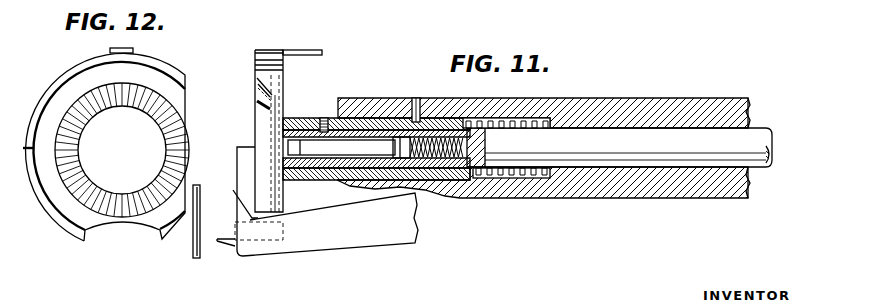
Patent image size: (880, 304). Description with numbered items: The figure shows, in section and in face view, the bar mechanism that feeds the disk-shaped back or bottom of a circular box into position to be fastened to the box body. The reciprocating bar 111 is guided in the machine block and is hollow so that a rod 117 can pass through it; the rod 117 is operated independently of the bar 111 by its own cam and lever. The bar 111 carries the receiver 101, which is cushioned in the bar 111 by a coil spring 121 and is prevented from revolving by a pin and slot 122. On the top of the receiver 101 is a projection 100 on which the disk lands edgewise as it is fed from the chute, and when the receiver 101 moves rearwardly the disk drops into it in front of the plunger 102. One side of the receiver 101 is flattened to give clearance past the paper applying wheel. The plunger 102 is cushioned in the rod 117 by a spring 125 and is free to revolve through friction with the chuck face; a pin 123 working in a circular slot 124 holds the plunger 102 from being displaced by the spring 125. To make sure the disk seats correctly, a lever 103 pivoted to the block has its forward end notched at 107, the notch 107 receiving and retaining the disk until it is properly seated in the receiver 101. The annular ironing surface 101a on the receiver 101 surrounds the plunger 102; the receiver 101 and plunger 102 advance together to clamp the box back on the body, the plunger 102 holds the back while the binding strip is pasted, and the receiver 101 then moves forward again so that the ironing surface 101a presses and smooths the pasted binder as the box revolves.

In FIG. 12, the projection 100 is at (110, 49).
In FIG. 11, the projection 100 is at (305, 50).
In FIG. 12, the receiver 101 is at (63, 71).
In FIG. 11, the receiver 101 is at (283, 65).
In FIG. 11, the ironing surface 101a is at (255, 65).
In FIG. 12, the plunger 102 is at (122, 150).
In FIG. 11, the plunger 102 is at (255, 115).
In FIG. 12, the lever 103 is at (193, 246).
In FIG. 11, the lever 103 is at (326, 224).
In FIG. 11, the notch 107 is at (251, 221).
In FIG. 11, the reciprocating bar 111 is at (640, 98).
In FIG. 11, the rod 117 is at (530, 147).
In FIG. 11, the coil spring 121 is at (499, 118).
In FIG. 11, the pin and slot 122 is at (404, 118).
In FIG. 11, the pin 123 is at (324, 117).
In FIG. 11, the circular slot 124 is at (326, 169).
In FIG. 11, the spring 125 is at (460, 159).